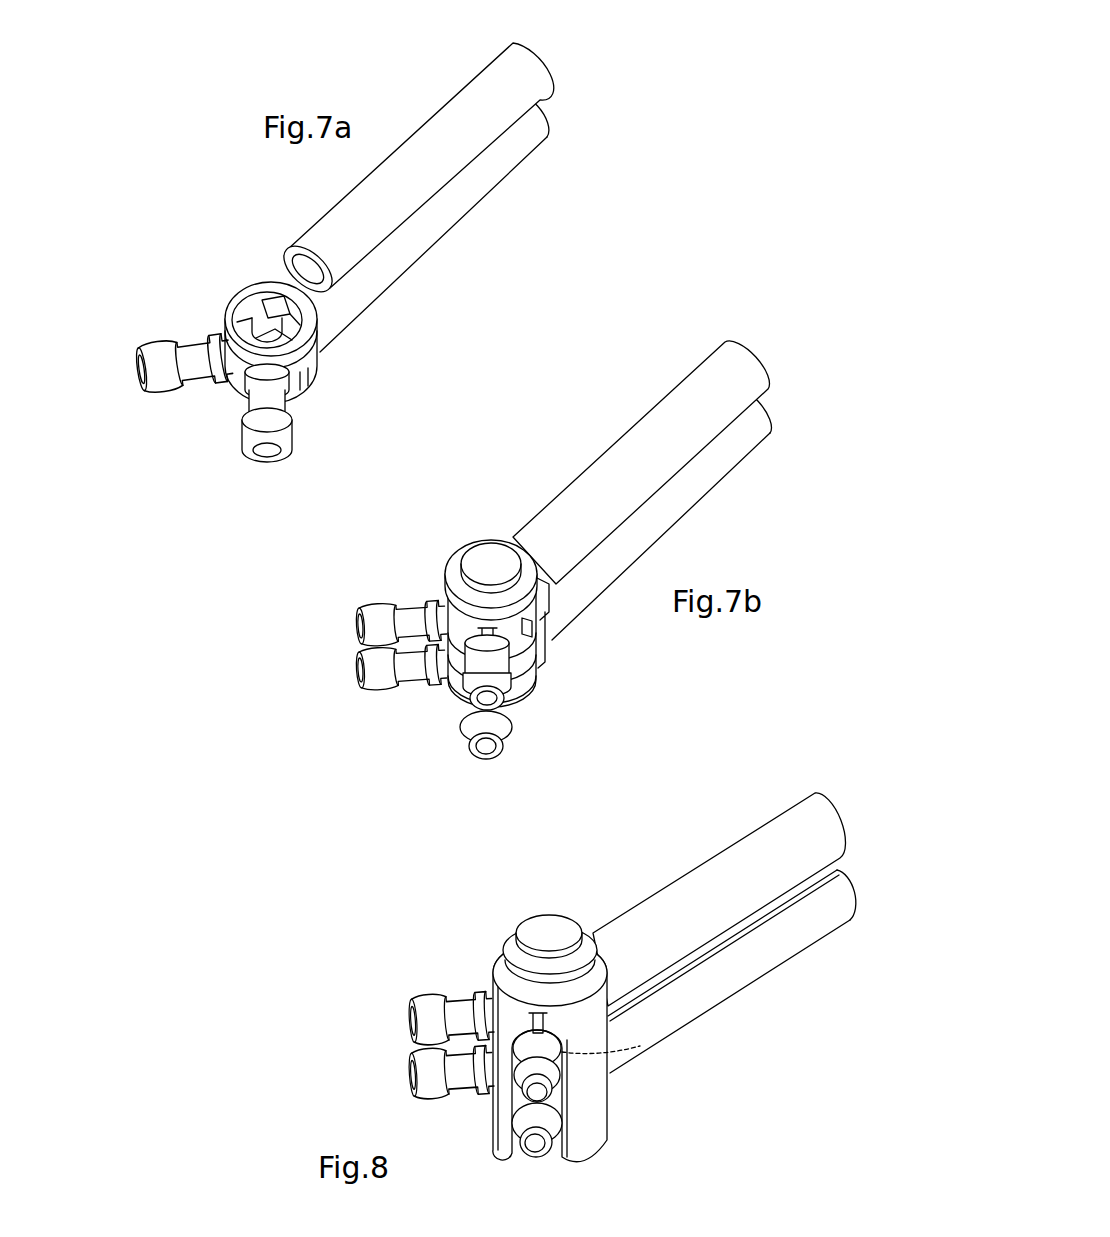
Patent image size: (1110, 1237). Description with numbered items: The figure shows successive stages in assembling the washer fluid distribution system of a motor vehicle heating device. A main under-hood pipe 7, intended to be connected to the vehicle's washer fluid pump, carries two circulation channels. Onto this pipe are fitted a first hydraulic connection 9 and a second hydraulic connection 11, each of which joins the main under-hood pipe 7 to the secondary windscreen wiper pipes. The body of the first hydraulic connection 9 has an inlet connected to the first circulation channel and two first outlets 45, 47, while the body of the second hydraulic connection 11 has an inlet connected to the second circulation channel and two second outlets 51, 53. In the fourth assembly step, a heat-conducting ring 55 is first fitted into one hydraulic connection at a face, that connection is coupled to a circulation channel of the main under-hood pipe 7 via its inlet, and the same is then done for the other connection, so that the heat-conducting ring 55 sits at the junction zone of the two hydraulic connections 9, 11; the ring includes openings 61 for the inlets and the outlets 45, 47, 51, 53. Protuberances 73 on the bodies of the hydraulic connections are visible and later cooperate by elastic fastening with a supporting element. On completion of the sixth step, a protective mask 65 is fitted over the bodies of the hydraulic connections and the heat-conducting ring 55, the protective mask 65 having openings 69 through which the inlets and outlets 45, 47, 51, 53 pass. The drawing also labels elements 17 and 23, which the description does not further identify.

In FIG. 7A, the main under-hood pipe 7 is at (415, 183).
In FIG. 7B, the main under-hood pipe 7 is at (642, 459).
In FIG. 8, the main under-hood pipe 7 is at (725, 901).
In FIG. 7A, the tube 17 is at (473, 68).
In FIG. 7B, the tube 17 is at (727, 340).
In FIG. 8, the tube 17 is at (817, 792).
In FIG. 7A, the coupling 23 is at (249, 338).
In FIG. 7A, the heat-conducting ring 55 is at (273, 266).
In FIG. 7B, the heat-conducting ring 55 is at (537, 647).
In FIG. 7A, the openings 61 is at (232, 286).
In FIG. 7A, the second outlet 51 is at (140, 370).
In FIG. 7B, the second outlet 51 is at (360, 668).
In FIG. 8, the second outlet 51 is at (413, 1078).
In FIG. 7A, the second hydraulic connection 11 is at (297, 416).
In FIG. 7B, the second hydraulic connection 11 is at (530, 697).
In FIG. 7A, the second outlet 53 is at (270, 460).
In FIG. 7B, the second outlet 53 is at (470, 757).
In FIG. 8, the second outlet 53 is at (530, 1160).
In FIG. 7B, the first hydraulic connection 9 is at (504, 616).
In FIG. 7B, the first outlet 45 is at (360, 633).
In FIG. 8, the first outlet 45 is at (413, 1023).
In FIG. 7B, the protuberances 73 is at (537, 671).
In FIG. 7B, the first outlet 47 is at (455, 700).
In FIG. 8, the first outlet 47 is at (585, 1140).
In FIG. 8, the protective mask 65 is at (542, 932).
In FIG. 8, the openings 69 is at (608, 1047).